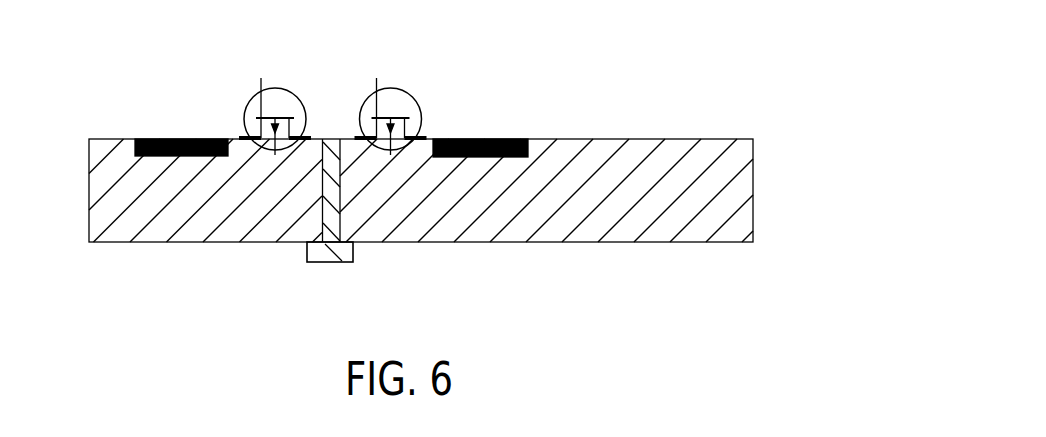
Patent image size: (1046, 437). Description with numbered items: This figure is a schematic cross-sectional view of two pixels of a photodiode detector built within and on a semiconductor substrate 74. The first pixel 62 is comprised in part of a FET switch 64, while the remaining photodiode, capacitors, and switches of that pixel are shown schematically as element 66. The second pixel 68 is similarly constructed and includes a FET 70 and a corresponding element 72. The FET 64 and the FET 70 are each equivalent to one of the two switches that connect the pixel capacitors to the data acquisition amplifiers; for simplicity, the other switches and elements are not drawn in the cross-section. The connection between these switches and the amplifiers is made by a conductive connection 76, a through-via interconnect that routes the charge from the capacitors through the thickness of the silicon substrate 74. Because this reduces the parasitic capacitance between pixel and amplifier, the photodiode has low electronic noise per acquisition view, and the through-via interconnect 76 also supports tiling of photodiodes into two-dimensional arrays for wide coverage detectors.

The pixel 62 is at (728, 95).
The FET switch 64 is at (413, 98).
The element 66 is at (498, 138).
The second pixel 68 is at (87, 82).
The FET 70 is at (298, 98).
The element 72 is at (178, 138).
The semiconductor substrate 74 is at (180, 210).
The conductive connection 76 is at (322, 224).